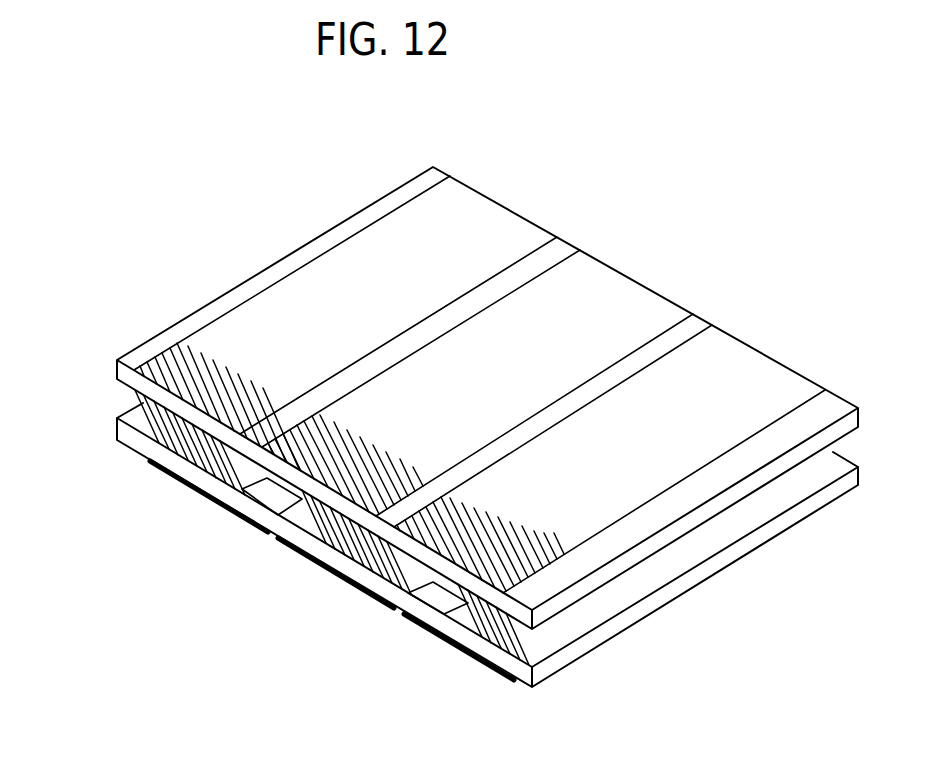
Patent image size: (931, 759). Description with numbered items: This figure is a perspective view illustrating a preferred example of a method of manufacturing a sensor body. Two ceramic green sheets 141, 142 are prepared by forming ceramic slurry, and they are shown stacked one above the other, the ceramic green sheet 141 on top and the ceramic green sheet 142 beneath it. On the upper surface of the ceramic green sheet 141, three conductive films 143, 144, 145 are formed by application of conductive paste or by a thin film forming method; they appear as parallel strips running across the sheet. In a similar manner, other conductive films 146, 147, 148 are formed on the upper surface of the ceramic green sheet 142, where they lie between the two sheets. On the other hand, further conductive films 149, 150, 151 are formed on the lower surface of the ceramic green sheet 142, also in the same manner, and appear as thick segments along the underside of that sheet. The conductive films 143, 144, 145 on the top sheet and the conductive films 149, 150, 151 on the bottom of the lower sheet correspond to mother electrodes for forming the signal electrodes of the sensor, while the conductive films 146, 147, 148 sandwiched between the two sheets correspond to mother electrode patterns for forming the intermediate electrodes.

The ceramic green sheet 141 is at (143, 338).
The ceramic green sheet 142 is at (127, 412).
The conductive film 143 is at (233, 330).
The conductive film 144 is at (618, 292).
The conductive film 145 is at (727, 363).
The conductive film 146 is at (172, 423).
The conductive film 147 is at (340, 552).
The conductive film 148 is at (470, 610).
The conductive film 149 is at (193, 490).
The conductive film 150 is at (297, 553).
The conductive film 151 is at (435, 636).